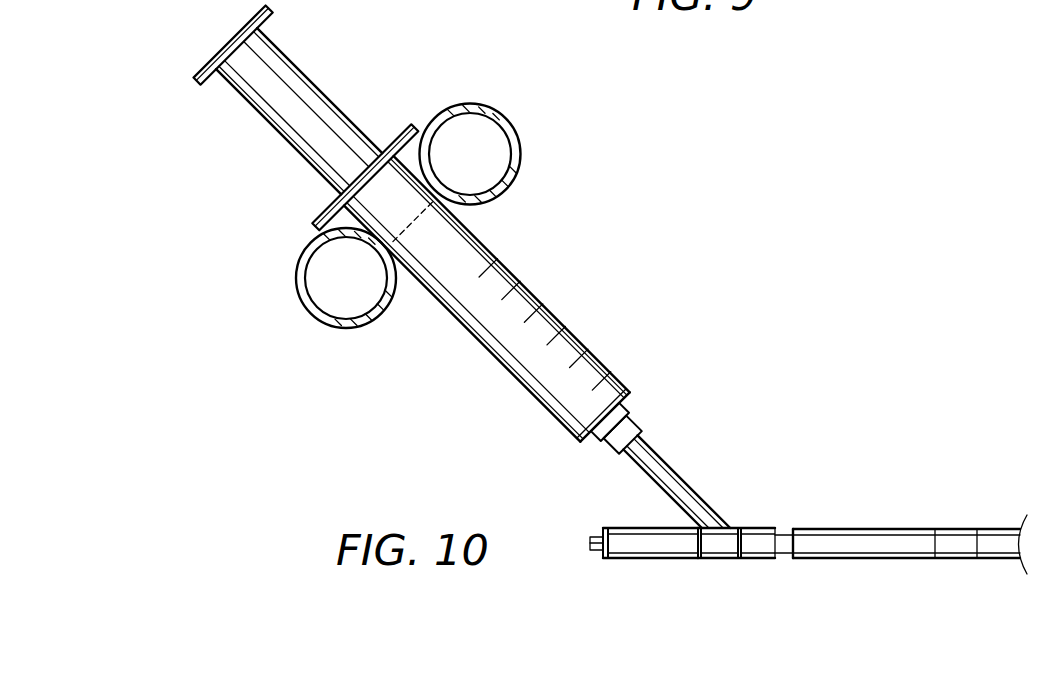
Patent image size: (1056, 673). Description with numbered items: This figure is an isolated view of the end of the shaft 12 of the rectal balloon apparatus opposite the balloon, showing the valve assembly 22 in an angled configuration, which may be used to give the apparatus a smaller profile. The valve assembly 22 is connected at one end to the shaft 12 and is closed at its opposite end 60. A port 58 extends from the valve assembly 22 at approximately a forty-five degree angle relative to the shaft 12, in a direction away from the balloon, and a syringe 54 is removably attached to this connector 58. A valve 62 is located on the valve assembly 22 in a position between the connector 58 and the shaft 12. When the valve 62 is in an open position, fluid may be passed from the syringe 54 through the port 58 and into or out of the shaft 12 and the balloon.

The shaft 12 is at (908, 529).
The valve assembly 22 is at (705, 557).
The syringe 54 is at (498, 259).
The port 58 is at (653, 450).
The opposite end 60 is at (604, 528).
The valve 62 is at (755, 558).